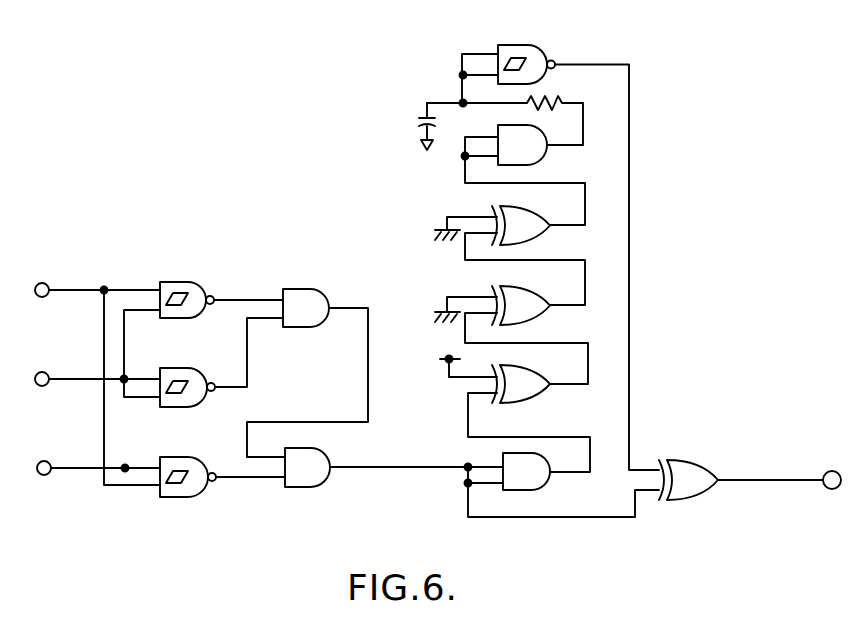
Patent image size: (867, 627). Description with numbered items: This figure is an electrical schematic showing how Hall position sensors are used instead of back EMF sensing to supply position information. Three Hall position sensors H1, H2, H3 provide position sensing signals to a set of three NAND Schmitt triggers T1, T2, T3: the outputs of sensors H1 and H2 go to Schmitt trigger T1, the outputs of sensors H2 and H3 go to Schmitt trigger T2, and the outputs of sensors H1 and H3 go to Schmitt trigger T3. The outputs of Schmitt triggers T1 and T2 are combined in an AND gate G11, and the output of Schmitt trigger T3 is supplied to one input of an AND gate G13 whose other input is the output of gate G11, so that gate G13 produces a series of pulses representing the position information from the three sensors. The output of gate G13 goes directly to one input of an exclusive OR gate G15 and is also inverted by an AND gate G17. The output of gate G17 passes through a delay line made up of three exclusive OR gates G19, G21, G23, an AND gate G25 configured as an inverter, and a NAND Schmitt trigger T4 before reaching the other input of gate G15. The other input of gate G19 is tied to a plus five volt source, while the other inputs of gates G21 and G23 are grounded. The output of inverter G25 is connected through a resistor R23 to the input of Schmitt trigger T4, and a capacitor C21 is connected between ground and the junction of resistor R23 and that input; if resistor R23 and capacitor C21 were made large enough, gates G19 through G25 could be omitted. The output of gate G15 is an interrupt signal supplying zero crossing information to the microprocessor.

The Hall position sensor H1 is at (37, 283).
The Hall position sensor H2 is at (37, 372).
The Hall position sensor H3 is at (38, 461).
The NAND Schmitt trigger T1 is at (214, 259).
The NAND Schmitt trigger T2 is at (235, 354).
The NAND Schmitt trigger T3 is at (233, 446).
The NAND Schmitt trigger T4 is at (525, 45).
The AND gate G11 is at (293, 288).
The AND gate G13 is at (308, 488).
The exclusive OR gate G15 is at (700, 460).
The AND gate G17 is at (540, 487).
The exclusive OR gate G19 is at (537, 400).
The exclusive OR gate G21 is at (537, 320).
The exclusive OR gate G23 is at (537, 240).
The AND gate G25 is at (535, 164).
The resistor R23 is at (549, 100).
The capacitor C21 is at (419, 118).